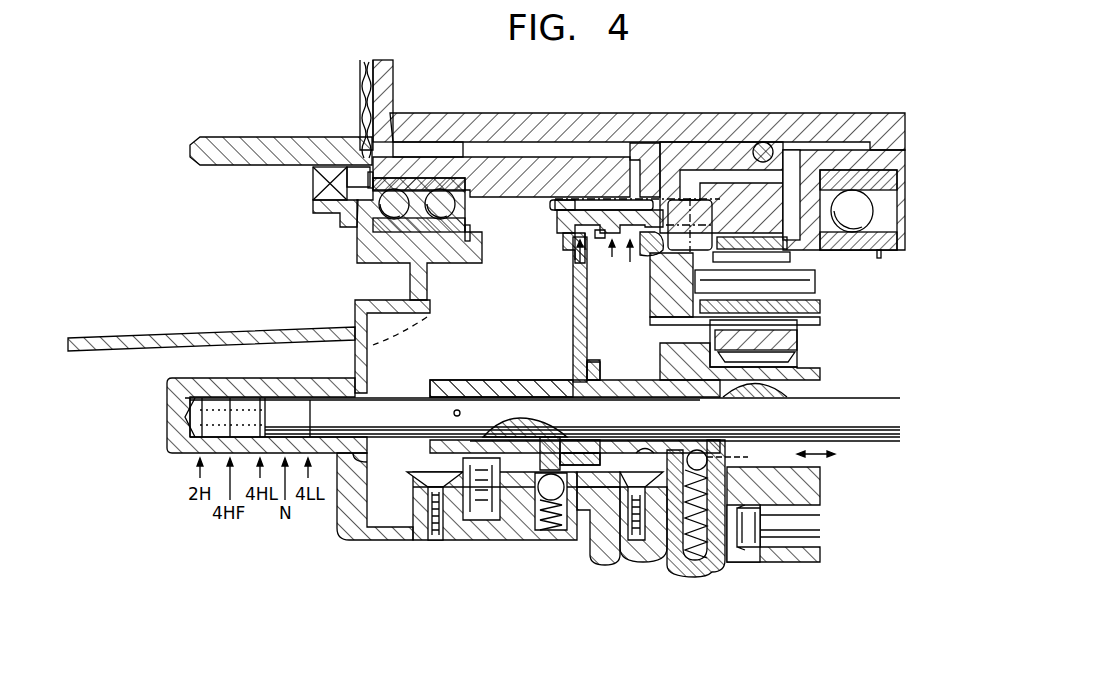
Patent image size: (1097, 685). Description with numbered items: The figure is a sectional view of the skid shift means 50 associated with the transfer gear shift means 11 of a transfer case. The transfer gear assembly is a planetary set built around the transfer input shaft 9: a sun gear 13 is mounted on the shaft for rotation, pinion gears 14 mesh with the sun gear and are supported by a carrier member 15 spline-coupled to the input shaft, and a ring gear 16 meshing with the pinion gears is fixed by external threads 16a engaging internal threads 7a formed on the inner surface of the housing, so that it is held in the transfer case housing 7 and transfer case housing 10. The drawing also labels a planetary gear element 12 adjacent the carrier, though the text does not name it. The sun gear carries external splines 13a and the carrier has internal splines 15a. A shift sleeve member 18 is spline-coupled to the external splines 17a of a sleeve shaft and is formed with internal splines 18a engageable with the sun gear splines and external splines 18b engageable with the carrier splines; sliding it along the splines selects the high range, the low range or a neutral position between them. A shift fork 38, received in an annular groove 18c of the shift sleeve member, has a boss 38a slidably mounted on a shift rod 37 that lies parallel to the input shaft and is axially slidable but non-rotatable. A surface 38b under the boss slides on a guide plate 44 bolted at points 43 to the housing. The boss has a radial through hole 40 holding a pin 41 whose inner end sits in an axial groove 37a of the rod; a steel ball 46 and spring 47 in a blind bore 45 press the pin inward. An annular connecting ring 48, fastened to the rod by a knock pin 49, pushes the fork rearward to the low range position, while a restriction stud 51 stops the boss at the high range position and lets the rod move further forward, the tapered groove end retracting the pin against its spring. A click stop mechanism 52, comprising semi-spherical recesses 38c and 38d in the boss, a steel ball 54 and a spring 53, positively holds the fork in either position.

The transfer case housing 7 is at (372, 540).
The internal threads 7a is at (797, 360).
The transfer input shaft 9 is at (898, 126).
The transfer case housing 10 is at (240, 152).
The transfer gear shift means 11 is at (481, 307).
The clutch assembly 12 is at (838, 316).
The sun gear 13 is at (735, 178).
The external splines 13a is at (703, 195).
The pinion gears 14 is at (818, 302).
The carrier member 15 is at (905, 172).
The internal splines 15a is at (652, 298).
The ring gear 16 is at (800, 333).
The external threads 16a is at (802, 368).
The external splines 17a is at (548, 213).
The shift sleeve member 18 is at (549, 236).
The internal splines 18a is at (566, 197).
The external splines 18b is at (650, 268).
The annular groove 18c is at (568, 255).
The shift rod 37 is at (868, 443).
The axial groove 37a is at (520, 418).
The shift fork 38 is at (563, 326).
The boss 38a is at (603, 378).
The surface 38b is at (490, 538).
The semi-spherical recess 38c is at (645, 447).
The semi-spherical recess 38d is at (705, 448).
The radial through hole 40 is at (578, 447).
The pin 41 is at (553, 437).
The bolting points 43 is at (428, 540).
The guide plate 44 is at (606, 490).
The blind bore 45 is at (556, 500).
The steel ball 46 is at (543, 518).
The spring 47 is at (549, 532).
The annular connecting ring 48 is at (455, 380).
The knock pin 49 is at (452, 412).
The skid shift means 50 is at (488, 542).
The restriction stud 51 is at (470, 522).
The click stop mechanism 52 is at (736, 577).
The spring 53 is at (694, 557).
The steel ball 54 is at (771, 455).